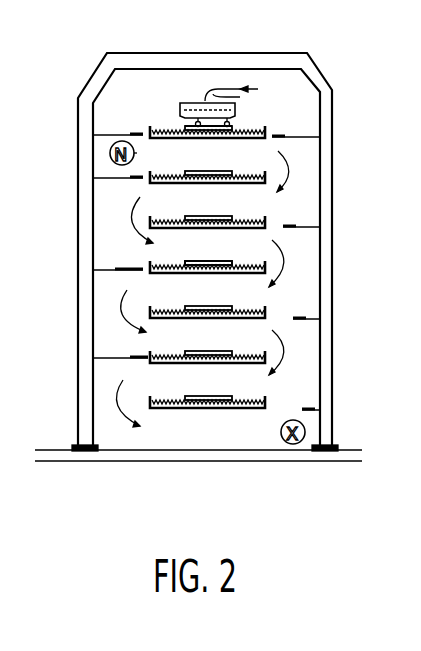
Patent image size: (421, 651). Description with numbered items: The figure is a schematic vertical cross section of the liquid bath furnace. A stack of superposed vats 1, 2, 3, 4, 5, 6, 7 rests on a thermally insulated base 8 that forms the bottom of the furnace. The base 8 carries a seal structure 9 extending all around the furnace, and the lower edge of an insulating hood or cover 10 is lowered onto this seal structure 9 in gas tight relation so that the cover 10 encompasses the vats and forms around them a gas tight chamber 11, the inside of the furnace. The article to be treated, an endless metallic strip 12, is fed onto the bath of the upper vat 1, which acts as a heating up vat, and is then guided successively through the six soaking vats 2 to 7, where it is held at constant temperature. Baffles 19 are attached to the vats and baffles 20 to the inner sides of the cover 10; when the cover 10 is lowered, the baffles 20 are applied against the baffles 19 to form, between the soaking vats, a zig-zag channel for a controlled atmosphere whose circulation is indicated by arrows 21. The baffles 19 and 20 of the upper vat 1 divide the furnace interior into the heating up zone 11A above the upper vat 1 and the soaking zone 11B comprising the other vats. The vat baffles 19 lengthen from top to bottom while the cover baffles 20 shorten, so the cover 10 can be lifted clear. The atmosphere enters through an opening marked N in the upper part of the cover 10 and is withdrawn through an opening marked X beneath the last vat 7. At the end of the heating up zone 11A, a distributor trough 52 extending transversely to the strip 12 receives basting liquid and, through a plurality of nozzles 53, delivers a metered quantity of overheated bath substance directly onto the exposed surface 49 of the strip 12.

The upper vat 1 is at (267, 132).
The soaking vat 2 is at (217, 176).
The soaking vat 3 is at (266, 226).
The soaking vat 4 is at (217, 270).
The soaking vat 5 is at (266, 314).
The soaking vat 6 is at (217, 352).
The last vat 7 is at (265, 405).
The thermally insulated base 8 is at (51, 451).
The seal structure 9 is at (73, 446).
The insulating hood or cover 10 is at (246, 63).
The gas tight chamber 11 is at (204, 263).
The heating up zone 11A is at (126, 89).
The soaking zone 11B is at (178, 287).
The metallic strip 12 is at (203, 262).
The baffles attached to vats 19 is at (135, 181).
The baffles on cover 20 is at (115, 175).
The arrows 21 is at (212, 289).
The exposed surface 49 is at (245, 130).
The distributor trough 52 is at (217, 98).
The nozzles 53 is at (184, 116).